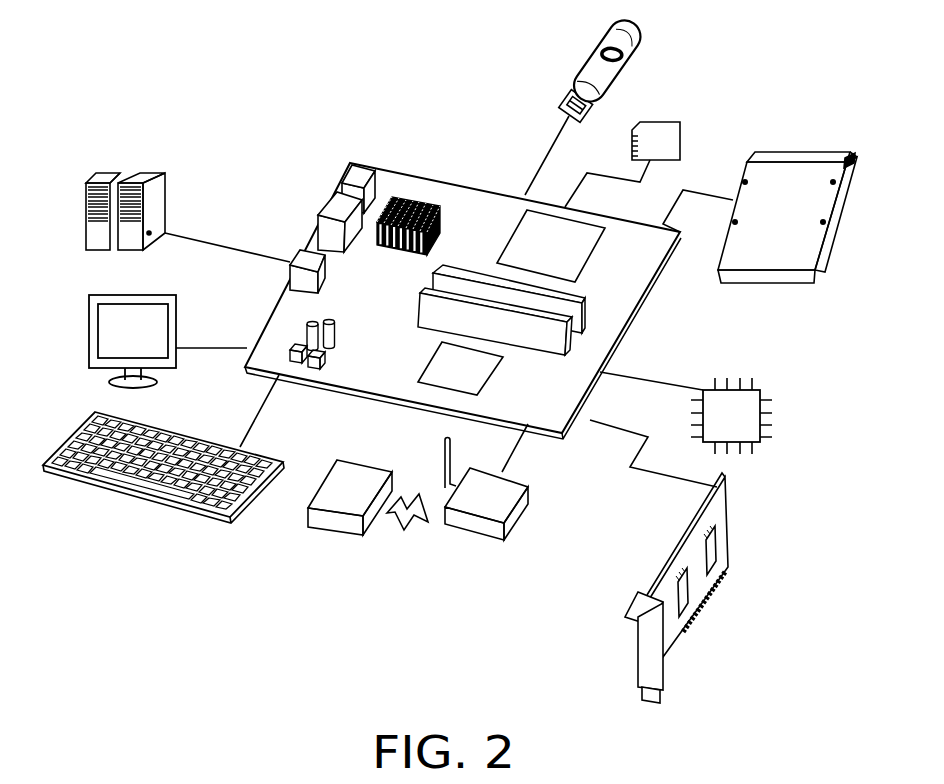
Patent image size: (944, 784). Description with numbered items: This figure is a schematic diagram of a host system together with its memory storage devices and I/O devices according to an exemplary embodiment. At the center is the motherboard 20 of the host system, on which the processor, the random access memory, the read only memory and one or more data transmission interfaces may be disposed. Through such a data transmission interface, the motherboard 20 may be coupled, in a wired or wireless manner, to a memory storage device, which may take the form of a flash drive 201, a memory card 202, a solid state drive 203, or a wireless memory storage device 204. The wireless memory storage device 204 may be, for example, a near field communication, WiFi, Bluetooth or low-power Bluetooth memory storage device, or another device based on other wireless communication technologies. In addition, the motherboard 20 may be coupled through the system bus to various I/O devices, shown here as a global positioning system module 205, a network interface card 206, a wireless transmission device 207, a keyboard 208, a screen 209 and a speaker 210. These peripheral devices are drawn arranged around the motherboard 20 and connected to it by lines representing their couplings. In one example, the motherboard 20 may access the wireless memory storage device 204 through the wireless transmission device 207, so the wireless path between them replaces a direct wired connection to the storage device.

The motherboard 20 is at (465, 207).
The flash drive 201 is at (586, 58).
The memory card 202 is at (688, 129).
The solid state drive 203 is at (805, 152).
The wireless memory storage device 204 is at (325, 472).
The global positioning system module 205 is at (765, 412).
The network interface card 206 is at (728, 535).
The wireless transmission device 207 is at (527, 521).
The keyboard 208 is at (166, 498).
The screen 209 is at (89, 350).
The speaker 210 is at (86, 233).